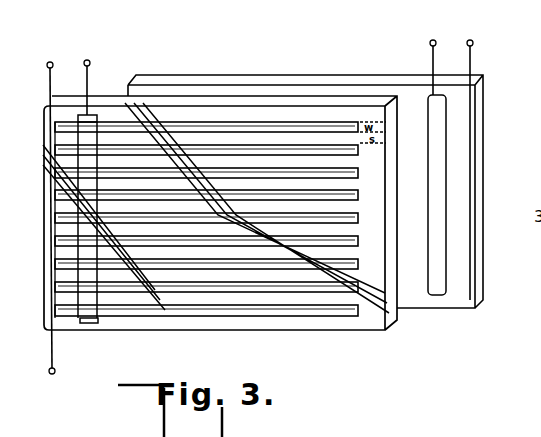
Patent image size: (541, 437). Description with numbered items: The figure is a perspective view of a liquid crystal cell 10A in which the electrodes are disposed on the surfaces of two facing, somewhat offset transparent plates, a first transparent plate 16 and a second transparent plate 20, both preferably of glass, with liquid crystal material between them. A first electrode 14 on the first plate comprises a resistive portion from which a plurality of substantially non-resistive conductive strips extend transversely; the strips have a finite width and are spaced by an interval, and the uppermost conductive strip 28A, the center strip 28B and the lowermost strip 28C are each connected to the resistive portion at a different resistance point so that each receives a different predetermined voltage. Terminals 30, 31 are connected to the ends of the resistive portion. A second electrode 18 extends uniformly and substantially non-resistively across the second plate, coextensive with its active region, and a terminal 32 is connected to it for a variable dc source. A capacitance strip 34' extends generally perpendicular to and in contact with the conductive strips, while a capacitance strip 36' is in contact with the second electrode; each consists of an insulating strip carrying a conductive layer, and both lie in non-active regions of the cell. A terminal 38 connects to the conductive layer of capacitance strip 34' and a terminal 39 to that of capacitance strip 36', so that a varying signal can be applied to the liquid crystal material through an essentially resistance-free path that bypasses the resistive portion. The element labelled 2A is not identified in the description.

The liquid crystal cell 10A is at (268, 20).
The first electrode 14 is at (284, 308).
The first transparent plate 16 is at (361, 327).
The second electrode 18 is at (410, 287).
The second transparent plate 20 is at (312, 78).
The panel side 2A is at (43, 136).
The uppermost conductive strip 28A is at (110, 122).
The center conductive strip 28B is at (68, 214).
The lowermost conductive strip 28C is at (152, 316).
The terminal 30 is at (49, 62).
The terminal 31 is at (48, 372).
The terminal 32 is at (472, 40).
The capacitance strip 34' is at (49, 220).
The capacitance strip 36' is at (475, 195).
The terminal 38 is at (88, 60).
The terminal 39 is at (434, 40).